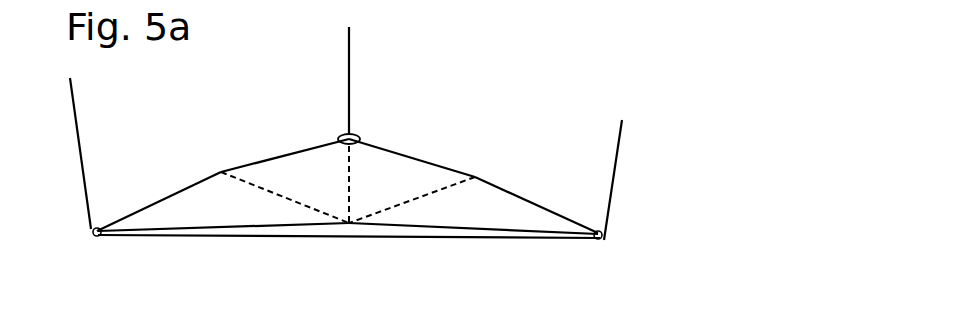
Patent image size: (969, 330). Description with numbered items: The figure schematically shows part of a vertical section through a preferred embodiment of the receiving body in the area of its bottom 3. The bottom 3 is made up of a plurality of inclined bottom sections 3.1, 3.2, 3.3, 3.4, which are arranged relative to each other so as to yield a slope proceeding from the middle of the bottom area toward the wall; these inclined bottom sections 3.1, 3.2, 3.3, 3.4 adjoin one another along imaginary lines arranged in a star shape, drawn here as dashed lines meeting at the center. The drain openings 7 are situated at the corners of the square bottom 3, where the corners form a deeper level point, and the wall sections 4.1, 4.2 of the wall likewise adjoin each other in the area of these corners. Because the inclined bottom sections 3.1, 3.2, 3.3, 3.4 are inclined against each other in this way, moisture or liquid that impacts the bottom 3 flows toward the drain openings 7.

The bottom 3 is at (343, 232).
The inclined bottom section 3.1 is at (393, 177).
The inclined bottom section 3.2 is at (297, 168).
The inclined bottom section 3.3 is at (502, 210).
The inclined bottom section 3.4 is at (195, 206).
The wall section 4.1 is at (589, 177).
The wall section 4.2 is at (97, 159).
The drain opening 7 is at (356, 135).